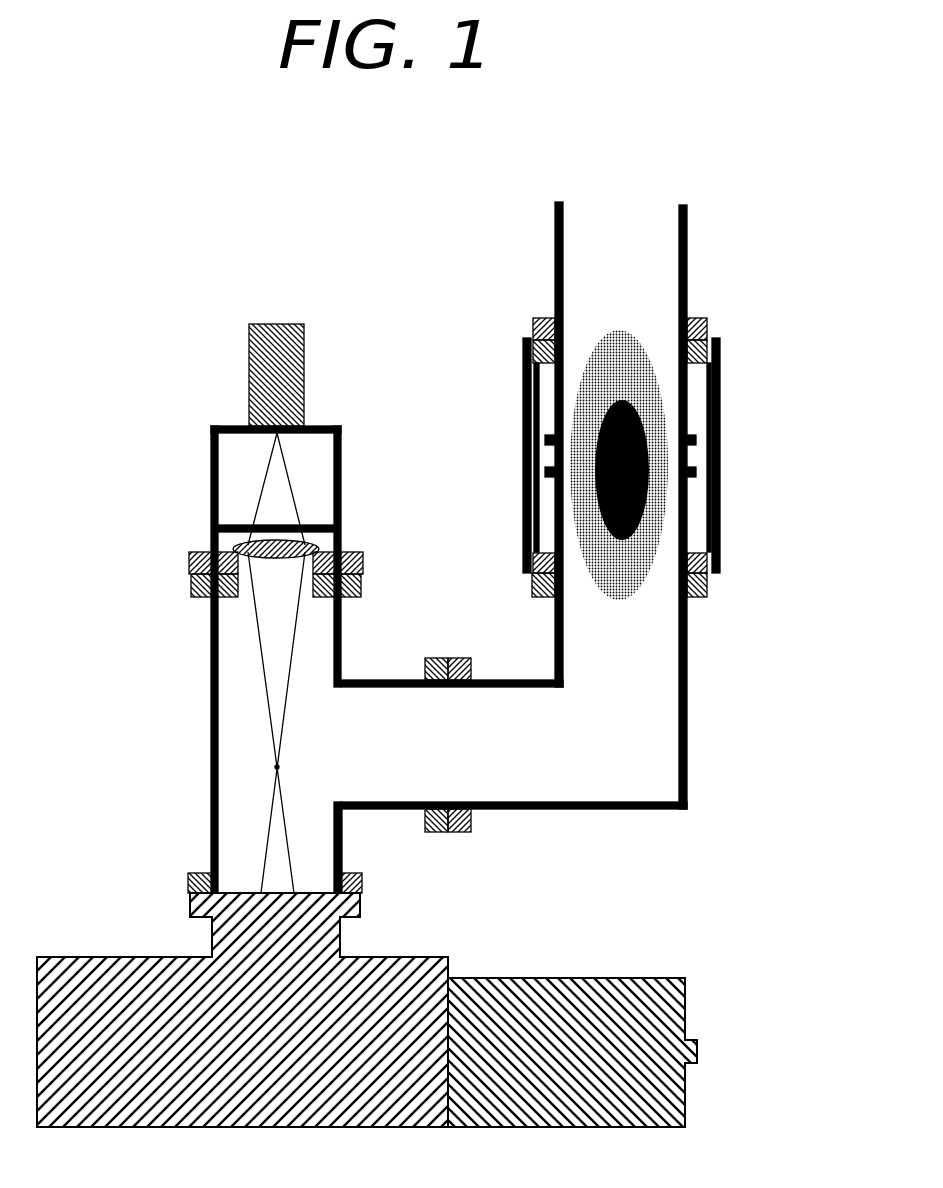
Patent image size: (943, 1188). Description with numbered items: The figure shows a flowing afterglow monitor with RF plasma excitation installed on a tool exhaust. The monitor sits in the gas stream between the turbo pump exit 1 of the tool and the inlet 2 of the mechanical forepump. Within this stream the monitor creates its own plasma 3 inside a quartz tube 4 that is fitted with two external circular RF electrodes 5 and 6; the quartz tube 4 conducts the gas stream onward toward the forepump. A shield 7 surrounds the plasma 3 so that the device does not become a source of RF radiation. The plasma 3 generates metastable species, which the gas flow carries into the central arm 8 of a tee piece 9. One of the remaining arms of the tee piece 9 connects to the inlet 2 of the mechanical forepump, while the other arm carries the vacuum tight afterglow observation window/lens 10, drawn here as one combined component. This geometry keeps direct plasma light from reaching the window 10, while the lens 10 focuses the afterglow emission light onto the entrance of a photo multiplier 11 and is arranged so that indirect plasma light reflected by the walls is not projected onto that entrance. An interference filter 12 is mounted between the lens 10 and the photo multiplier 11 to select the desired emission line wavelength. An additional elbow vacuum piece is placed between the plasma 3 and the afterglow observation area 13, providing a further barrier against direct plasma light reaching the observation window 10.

The turbo pump exit 1 is at (608, 232).
The inlet of the mechanical forepump 2 is at (322, 946).
The plasma 3 is at (630, 573).
The quartz tube 4 is at (536, 413).
The external circular RF electrode 5 is at (545, 440).
The external circular RF electrode 6 is at (545, 475).
The shield 7 is at (523, 553).
The central arm 8 is at (359, 712).
The tee piece 9 is at (210, 753).
The afterglow observation window/lens 10 is at (313, 548).
The photo multiplier 11 is at (290, 391).
The interference filter 12 is at (228, 525).
The afterglow observation area 13 is at (280, 763).